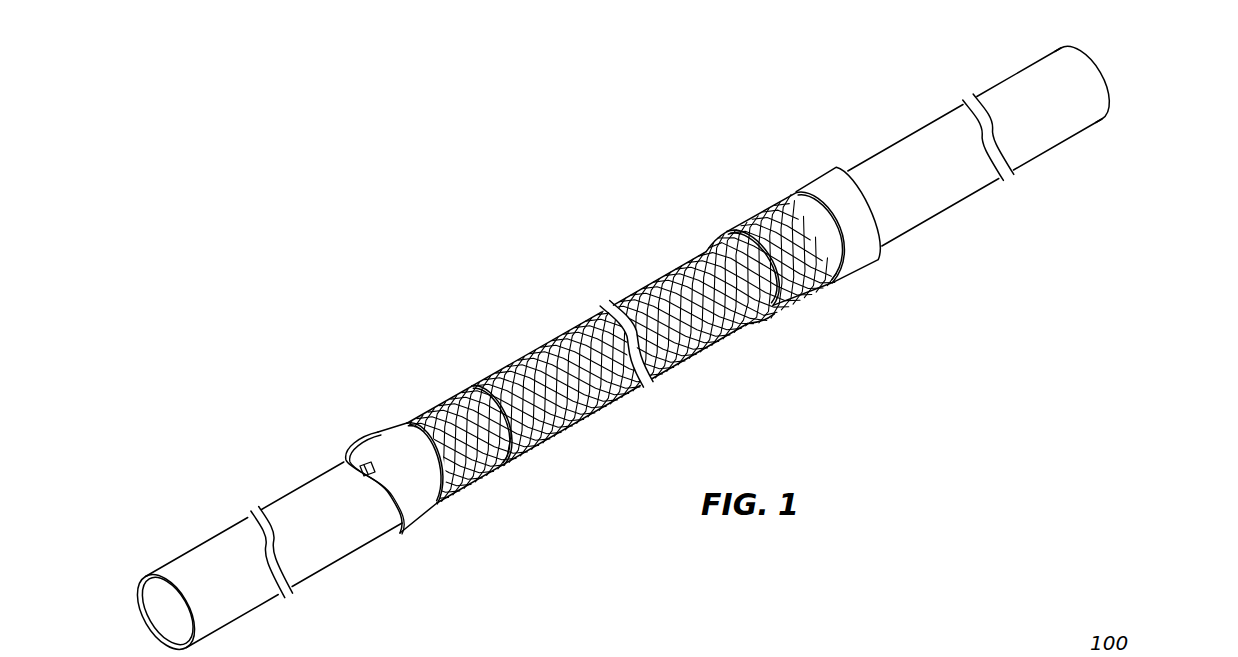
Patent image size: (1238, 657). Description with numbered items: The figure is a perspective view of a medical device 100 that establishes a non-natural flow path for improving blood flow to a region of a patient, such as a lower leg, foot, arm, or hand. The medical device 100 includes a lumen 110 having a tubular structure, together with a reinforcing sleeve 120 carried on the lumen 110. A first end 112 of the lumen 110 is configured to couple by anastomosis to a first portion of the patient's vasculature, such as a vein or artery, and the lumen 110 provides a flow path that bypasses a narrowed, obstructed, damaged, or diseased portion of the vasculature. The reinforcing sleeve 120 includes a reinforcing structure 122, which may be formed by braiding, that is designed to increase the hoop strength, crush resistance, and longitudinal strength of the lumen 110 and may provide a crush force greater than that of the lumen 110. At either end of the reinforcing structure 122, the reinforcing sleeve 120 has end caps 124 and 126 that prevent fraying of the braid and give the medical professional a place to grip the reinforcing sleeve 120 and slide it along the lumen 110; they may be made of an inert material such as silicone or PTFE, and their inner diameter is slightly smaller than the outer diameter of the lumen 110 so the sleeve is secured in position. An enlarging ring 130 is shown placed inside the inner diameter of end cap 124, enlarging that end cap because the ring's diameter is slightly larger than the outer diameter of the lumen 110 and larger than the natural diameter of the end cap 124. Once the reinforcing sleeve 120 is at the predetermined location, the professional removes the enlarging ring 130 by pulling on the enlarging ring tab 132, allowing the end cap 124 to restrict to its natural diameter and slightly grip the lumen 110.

The medical device 100 is at (482, 267).
The lumen 110 is at (217, 553).
The first end 112 is at (1110, 97).
The reinforcing sleeve 120 is at (506, 361).
The reinforcing structure 122 is at (693, 353).
The end cap 124 is at (425, 513).
The end cap 126 is at (860, 263).
The enlarging ring 130 is at (345, 477).
The enlarging ring tab 132 is at (362, 463).